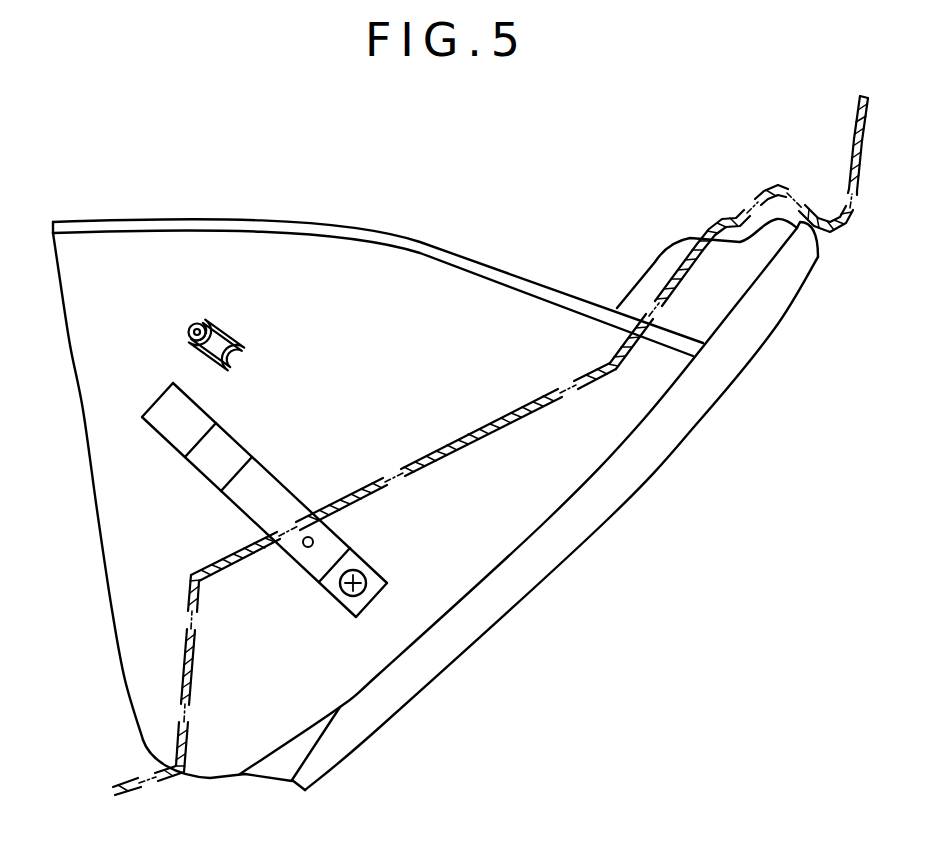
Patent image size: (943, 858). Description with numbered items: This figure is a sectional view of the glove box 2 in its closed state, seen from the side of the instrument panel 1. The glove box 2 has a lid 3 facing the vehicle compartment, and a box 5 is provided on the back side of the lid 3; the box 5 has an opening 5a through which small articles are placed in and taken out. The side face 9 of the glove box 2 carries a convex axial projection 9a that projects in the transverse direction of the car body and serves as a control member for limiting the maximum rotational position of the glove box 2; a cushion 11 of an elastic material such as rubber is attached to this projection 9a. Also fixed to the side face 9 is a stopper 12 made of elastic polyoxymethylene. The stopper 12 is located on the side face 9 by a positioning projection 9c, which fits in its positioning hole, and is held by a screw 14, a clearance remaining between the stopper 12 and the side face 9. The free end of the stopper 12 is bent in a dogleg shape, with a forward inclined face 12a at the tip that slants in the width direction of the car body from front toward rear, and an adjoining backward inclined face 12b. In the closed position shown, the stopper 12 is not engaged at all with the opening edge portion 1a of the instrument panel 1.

The instrument panel 1 is at (838, 133).
The opening edge portion 1a is at (380, 492).
The glove box 2 is at (658, 487).
The lid 3 is at (520, 587).
The box 5 is at (167, 220).
The opening 5a is at (452, 286).
The left side face 9 is at (356, 262).
The axial projection 9a is at (190, 327).
The projection 9c is at (303, 550).
The cushion 11 is at (247, 335).
The stopper 12 is at (278, 498).
The forward inclined face 12a is at (180, 433).
The backward inclined face 12b is at (228, 447).
The screw 14 is at (337, 600).